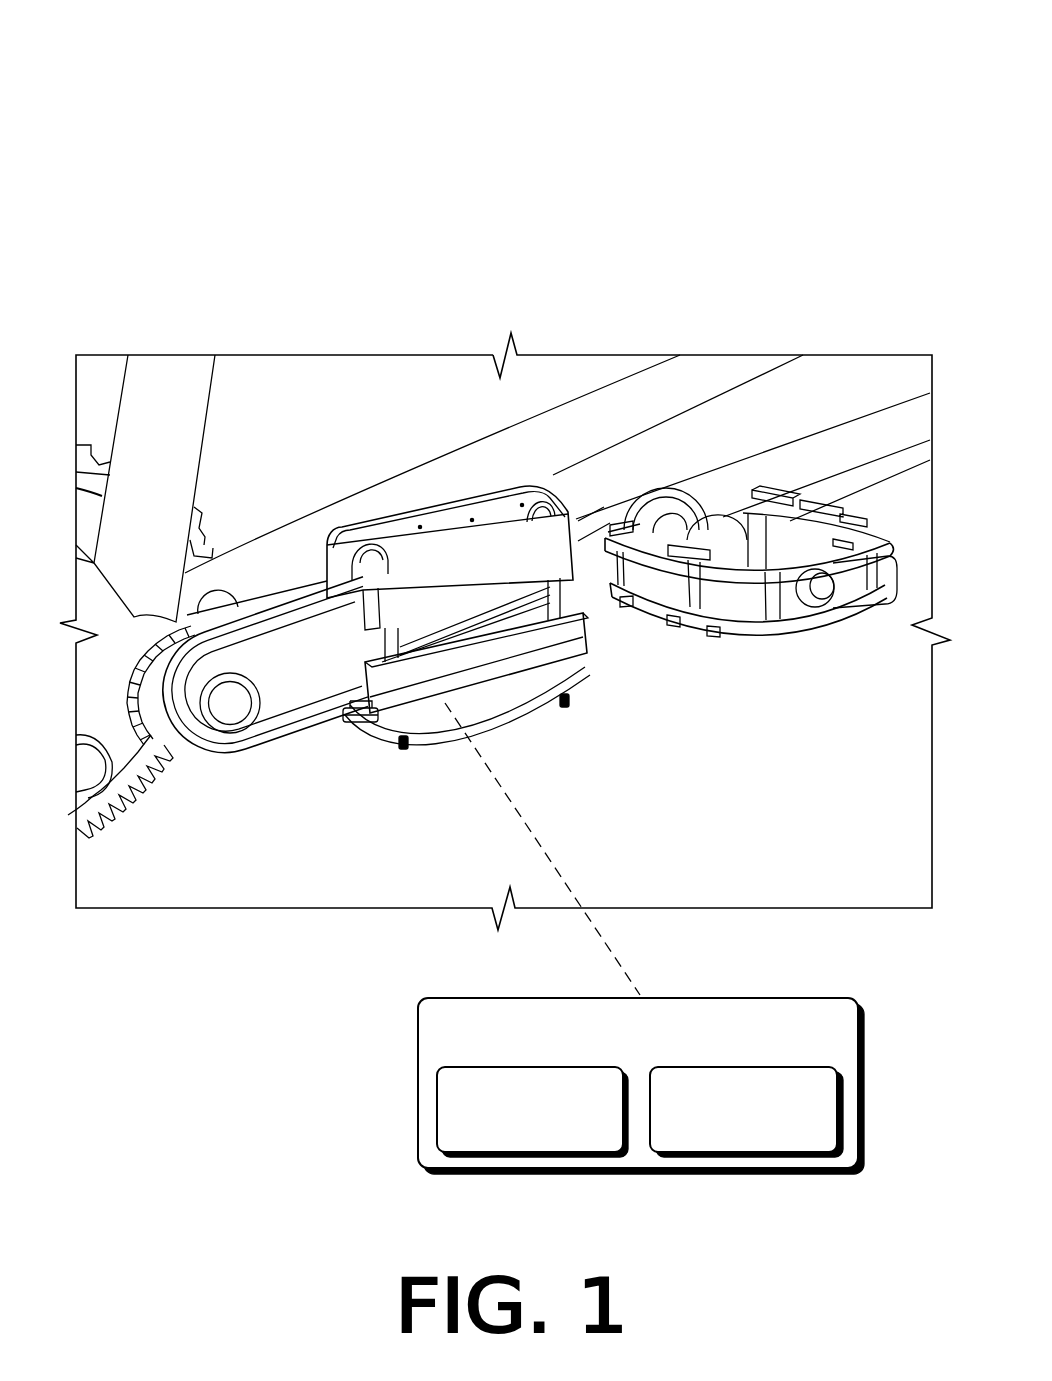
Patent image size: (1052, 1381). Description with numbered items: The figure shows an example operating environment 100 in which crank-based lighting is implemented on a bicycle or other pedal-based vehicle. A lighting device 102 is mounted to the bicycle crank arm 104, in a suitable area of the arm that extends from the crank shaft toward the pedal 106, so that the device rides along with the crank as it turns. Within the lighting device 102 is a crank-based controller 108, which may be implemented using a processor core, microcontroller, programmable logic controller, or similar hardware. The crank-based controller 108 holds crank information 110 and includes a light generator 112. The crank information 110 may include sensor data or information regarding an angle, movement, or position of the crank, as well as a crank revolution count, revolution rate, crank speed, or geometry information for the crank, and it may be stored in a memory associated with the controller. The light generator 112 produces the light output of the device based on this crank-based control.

The operating environment 100 is at (147, 67).
The lighting device 102 is at (565, 722).
The bicycle crank arm 104 is at (233, 753).
The pedal 106 is at (818, 628).
The crank-based controller 108 is at (641, 1086).
The crank information 110 is at (532, 1112).
The light generator 112 is at (746, 1112).